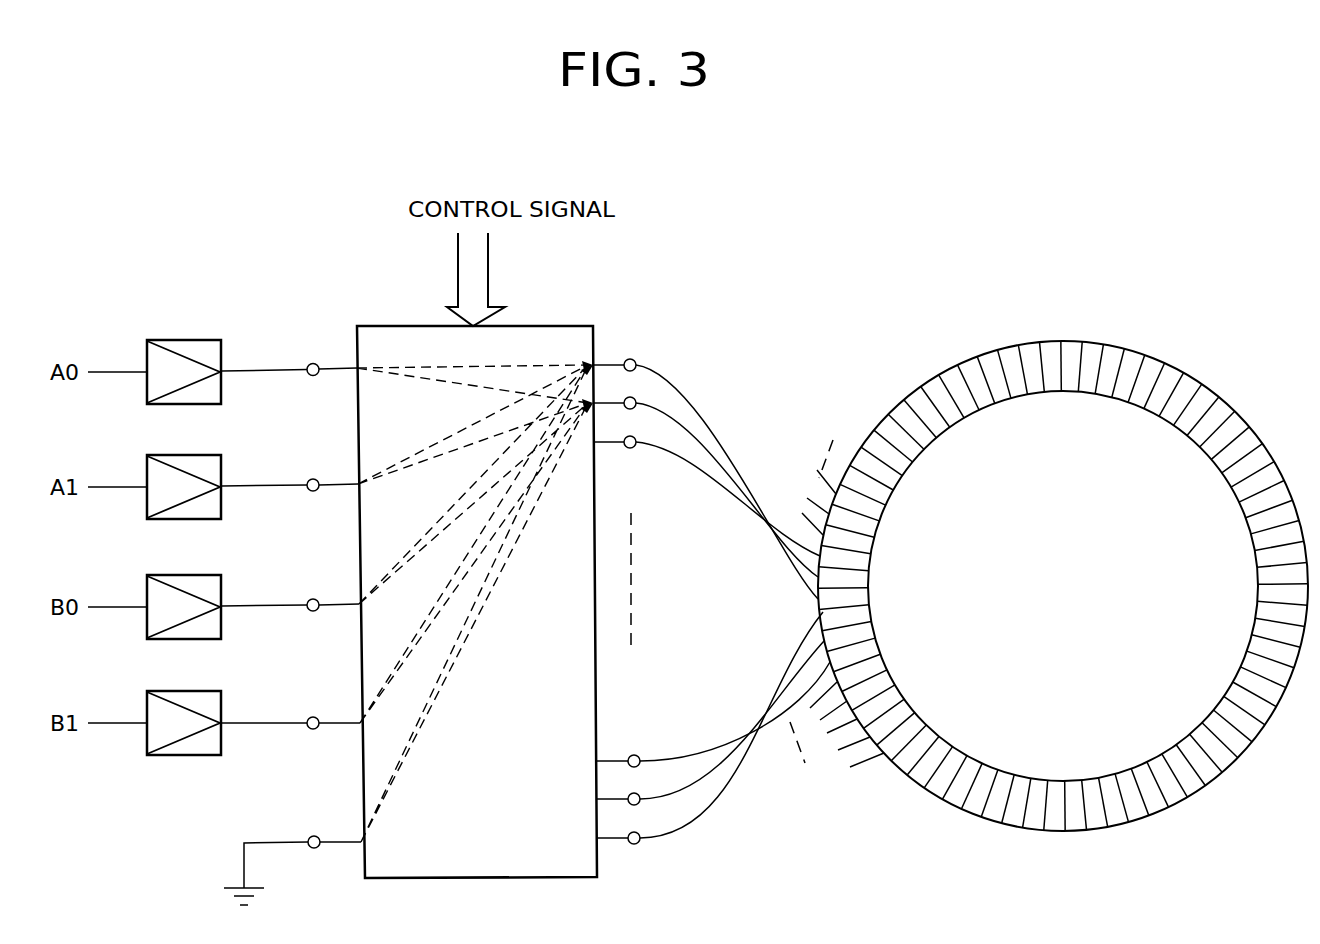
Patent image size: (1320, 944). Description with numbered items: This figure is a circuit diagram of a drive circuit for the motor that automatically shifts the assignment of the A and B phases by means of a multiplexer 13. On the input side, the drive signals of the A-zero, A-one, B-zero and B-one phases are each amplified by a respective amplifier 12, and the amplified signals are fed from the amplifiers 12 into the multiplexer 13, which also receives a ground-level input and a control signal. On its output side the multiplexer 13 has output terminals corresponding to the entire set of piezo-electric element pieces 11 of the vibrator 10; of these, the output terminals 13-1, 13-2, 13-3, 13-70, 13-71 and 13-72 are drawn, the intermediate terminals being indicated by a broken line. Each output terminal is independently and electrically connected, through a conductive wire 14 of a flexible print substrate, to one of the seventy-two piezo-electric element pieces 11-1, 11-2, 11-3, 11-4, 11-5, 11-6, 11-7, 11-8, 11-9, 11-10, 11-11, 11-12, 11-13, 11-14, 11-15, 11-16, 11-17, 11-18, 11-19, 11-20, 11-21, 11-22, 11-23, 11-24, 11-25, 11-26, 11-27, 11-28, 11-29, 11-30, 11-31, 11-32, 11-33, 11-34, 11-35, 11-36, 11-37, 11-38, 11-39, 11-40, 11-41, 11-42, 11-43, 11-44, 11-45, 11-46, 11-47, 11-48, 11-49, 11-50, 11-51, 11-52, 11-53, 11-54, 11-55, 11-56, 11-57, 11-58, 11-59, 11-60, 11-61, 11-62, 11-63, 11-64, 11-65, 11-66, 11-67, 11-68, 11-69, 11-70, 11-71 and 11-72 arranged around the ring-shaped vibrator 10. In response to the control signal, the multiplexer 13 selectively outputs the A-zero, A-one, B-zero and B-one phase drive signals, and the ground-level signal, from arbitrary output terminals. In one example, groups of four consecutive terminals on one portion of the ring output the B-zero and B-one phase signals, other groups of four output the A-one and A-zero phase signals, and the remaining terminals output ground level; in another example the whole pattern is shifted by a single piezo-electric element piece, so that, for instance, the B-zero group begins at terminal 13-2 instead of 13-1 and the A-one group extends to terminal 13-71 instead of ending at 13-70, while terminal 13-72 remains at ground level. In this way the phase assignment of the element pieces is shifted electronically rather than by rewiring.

The vibrator 10 is at (1067, 342).
The piezo-electric element pieces 11 is at (942, 370).
The amplifiers 12 is at (217, 339).
The multiplexer 13 is at (556, 325).
The conductive wires 14 is at (684, 384).
The output terminal 13-1 is at (618, 351).
The output terminal 13-2 is at (618, 390).
The output terminal 13-3 is at (618, 429).
The output terminal 13-70 is at (632, 746).
The output terminal 13-71 is at (632, 787).
The output terminal 13-72 is at (632, 825).
The piezo-electric element piece 11-1 is at (868, 597).
The piezo-electric element piece 11-2 is at (868, 579).
The piezo-electric element piece 11-3 is at (870, 562).
The piezo-electric element piece 11-4 is at (872, 545).
The piezo-electric element piece 11-5 is at (852, 523).
The piezo-electric element piece 11-6 is at (858, 505).
The piezo-electric element piece 11-7 is at (866, 487).
The piezo-electric element piece 11-8 is at (876, 470).
The piezo-electric element piece 11-9 is at (886, 454).
The piezo-electric element piece 11-10 is at (899, 439).
The piezo-electric element piece 11-11 is at (912, 426).
The piezo-electric element piece 11-12 is at (927, 413).
The piezo-electric element piece 11-13 is at (942, 402).
The piezo-electric element piece 11-14 is at (959, 392).
The piezo-electric element piece 11-15 is at (975, 384).
The piezo-electric element piece 11-16 is at (993, 377).
The piezo-electric element piece 11-17 is at (1012, 372).
The piezo-electric element piece 11-18 is at (1030, 368).
The piezo-electric element piece 11-19 is at (1050, 366).
The piezo-electric element piece 11-20 is at (1069, 366).
The piezo-electric element piece 11-21 is at (1088, 368).
The piezo-electric element piece 11-22 is at (1107, 370).
The piezo-electric element piece 11-23 is at (1126, 375).
The piezo-electric element piece 11-24 is at (1144, 381).
The piezo-electric element piece 11-25 is at (1161, 389).
The piezo-electric element piece 11-26 is at (1178, 399).
The piezo-electric element piece 11-27 is at (1194, 409).
The piezo-electric element piece 11-28 is at (1208, 422).
The piezo-electric element piece 11-29 is at (1222, 435).
The piezo-electric element piece 11-30 is at (1235, 450).
The piezo-electric element piece 11-31 is at (1247, 465).
The piezo-electric element piece 11-32 is at (1256, 482).
The piezo-electric element piece 11-33 is at (1264, 498).
The piezo-electric element piece 11-34 is at (1271, 516).
The piezo-electric element piece 11-35 is at (1276, 535).
The piezo-electric element piece 11-36 is at (1280, 553).
The piezo-electric element piece 11-37 is at (1282, 573).
The piezo-electric element piece 11-38 is at (1282, 592).
The piezo-electric element piece 11-39 is at (1281, 611).
The piezo-electric element piece 11-40 is at (1278, 630).
The piezo-electric element piece 11-41 is at (1273, 649).
The piezo-electric element piece 11-42 is at (1267, 667).
The piezo-electric element piece 11-43 is at (1259, 684).
The piezo-electric element piece 11-44 is at (1250, 701).
The piezo-electric element piece 11-45 is at (1239, 717).
The piezo-electric element piece 11-46 is at (1227, 731).
The piezo-electric element piece 11-47 is at (1214, 745).
The piezo-electric element piece 11-48 is at (1200, 758).
The piezo-electric element piece 11-49 is at (1183, 770).
The piezo-electric element piece 11-50 is at (1167, 779).
The piezo-electric element piece 11-51 is at (1150, 787).
The piezo-electric element piece 11-52 is at (1132, 794).
The piezo-electric element piece 11-53 is at (1113, 799).
The piezo-electric element piece 11-54 is at (1094, 803).
The piezo-electric element piece 11-55 is at (1075, 805).
The piezo-electric element piece 11-56 is at (1056, 805).
The piezo-electric element piece 11-57 is at (1037, 804).
The piezo-electric element piece 11-58 is at (1018, 801).
The piezo-electric element piece 11-59 is at (1000, 796).
The piezo-electric element piece 11-60 is at (982, 790).
The piezo-electric element piece 11-61 is at (964, 782).
The piezo-electric element piece 11-62 is at (947, 773).
The piezo-electric element piece 11-63 is at (931, 762).
The piezo-electric element piece 11-64 is at (916, 750).
The piezo-electric element piece 11-65 is at (903, 737).
The piezo-electric element piece 11-66 is at (890, 723).
The piezo-electric element piece 11-67 is at (879, 706).
The piezo-electric element piece 11-68 is at (869, 690).
The piezo-electric element piece 11-69 is at (861, 673).
The piezo-electric element piece 11-70 is at (854, 655).
The piezo-electric element piece 11-71 is at (849, 636).
The piezo-electric element piece 11-72 is at (845, 617).